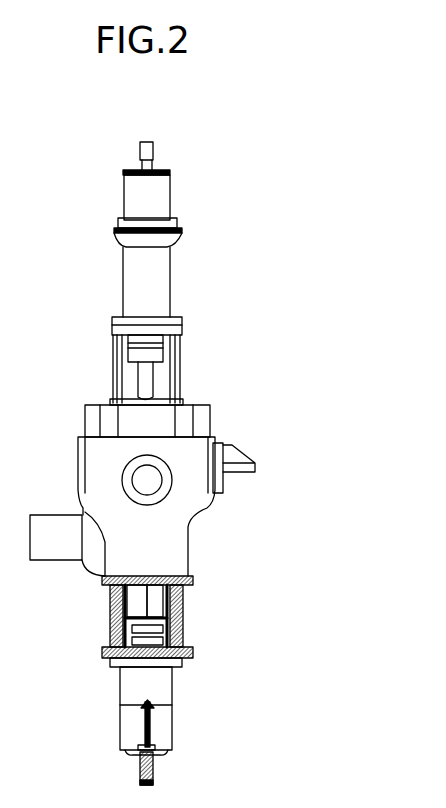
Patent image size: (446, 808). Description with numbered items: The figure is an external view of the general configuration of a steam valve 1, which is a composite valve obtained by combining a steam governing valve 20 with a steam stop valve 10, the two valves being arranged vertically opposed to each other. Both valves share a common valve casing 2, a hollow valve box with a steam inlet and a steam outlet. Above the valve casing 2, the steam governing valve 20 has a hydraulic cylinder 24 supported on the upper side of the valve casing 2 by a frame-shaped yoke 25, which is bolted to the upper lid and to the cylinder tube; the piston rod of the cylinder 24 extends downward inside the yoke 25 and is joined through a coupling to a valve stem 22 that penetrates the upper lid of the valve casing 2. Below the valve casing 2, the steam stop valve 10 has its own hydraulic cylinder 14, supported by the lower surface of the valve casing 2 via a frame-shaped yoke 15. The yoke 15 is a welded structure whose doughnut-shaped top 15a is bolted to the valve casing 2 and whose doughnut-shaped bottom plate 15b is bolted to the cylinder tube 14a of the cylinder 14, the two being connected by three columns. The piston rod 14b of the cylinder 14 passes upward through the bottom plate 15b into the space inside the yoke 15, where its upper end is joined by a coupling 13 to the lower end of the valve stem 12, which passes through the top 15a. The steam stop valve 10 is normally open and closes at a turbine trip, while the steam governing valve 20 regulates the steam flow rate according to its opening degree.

The steam valve 1 is at (288, 237).
The valve casing 2 is at (74, 468).
The steam stop valve 10 is at (216, 608).
The valve stem 12 is at (168, 600).
The coupling 13 is at (122, 622).
The cylinder 14 is at (177, 706).
The cylinder tube 14a is at (122, 712).
The piston rod 14b is at (125, 648).
The yoke 15 is at (105, 593).
The top 15a is at (193, 580).
The bottom plate 15b is at (193, 652).
The steam governing valve 20 is at (197, 358).
The valve stem 22 is at (137, 370).
The cylinder 24 is at (123, 265).
The yoke 25 is at (182, 388).